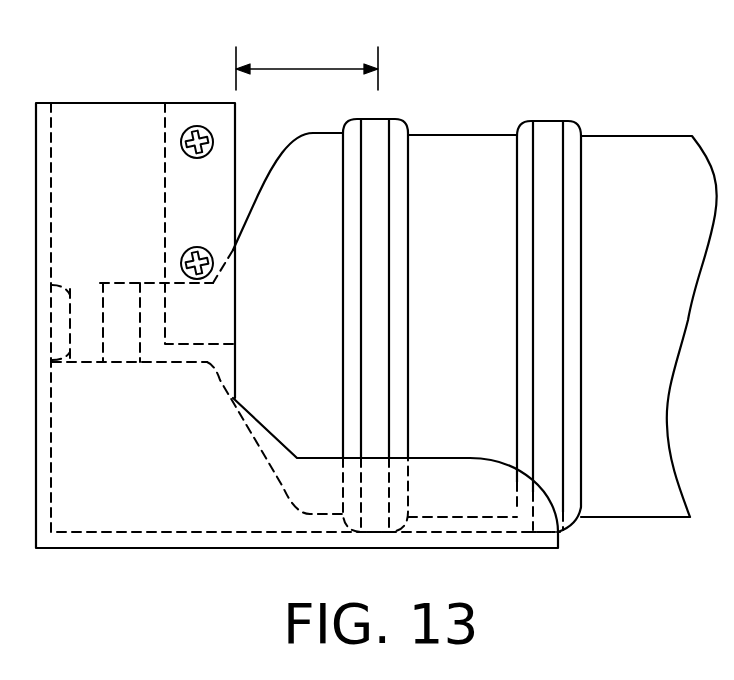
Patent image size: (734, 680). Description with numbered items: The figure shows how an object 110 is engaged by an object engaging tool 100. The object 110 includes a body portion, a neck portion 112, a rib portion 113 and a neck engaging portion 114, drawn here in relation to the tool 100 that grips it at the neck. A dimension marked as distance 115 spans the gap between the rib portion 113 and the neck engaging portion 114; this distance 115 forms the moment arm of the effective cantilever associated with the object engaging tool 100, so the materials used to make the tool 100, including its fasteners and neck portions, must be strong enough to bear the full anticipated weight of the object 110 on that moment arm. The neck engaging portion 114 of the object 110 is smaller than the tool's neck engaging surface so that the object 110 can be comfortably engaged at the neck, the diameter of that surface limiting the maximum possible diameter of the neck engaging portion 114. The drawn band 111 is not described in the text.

The object engaging tool 100 is at (112, 520).
The object 110 is at (634, 134).
The second band 111 is at (482, 133).
The neck portion 112 is at (85, 283).
The rib portion 113 is at (395, 118).
The neck engaging portion 114 is at (212, 366).
The distance 115 is at (306, 60).